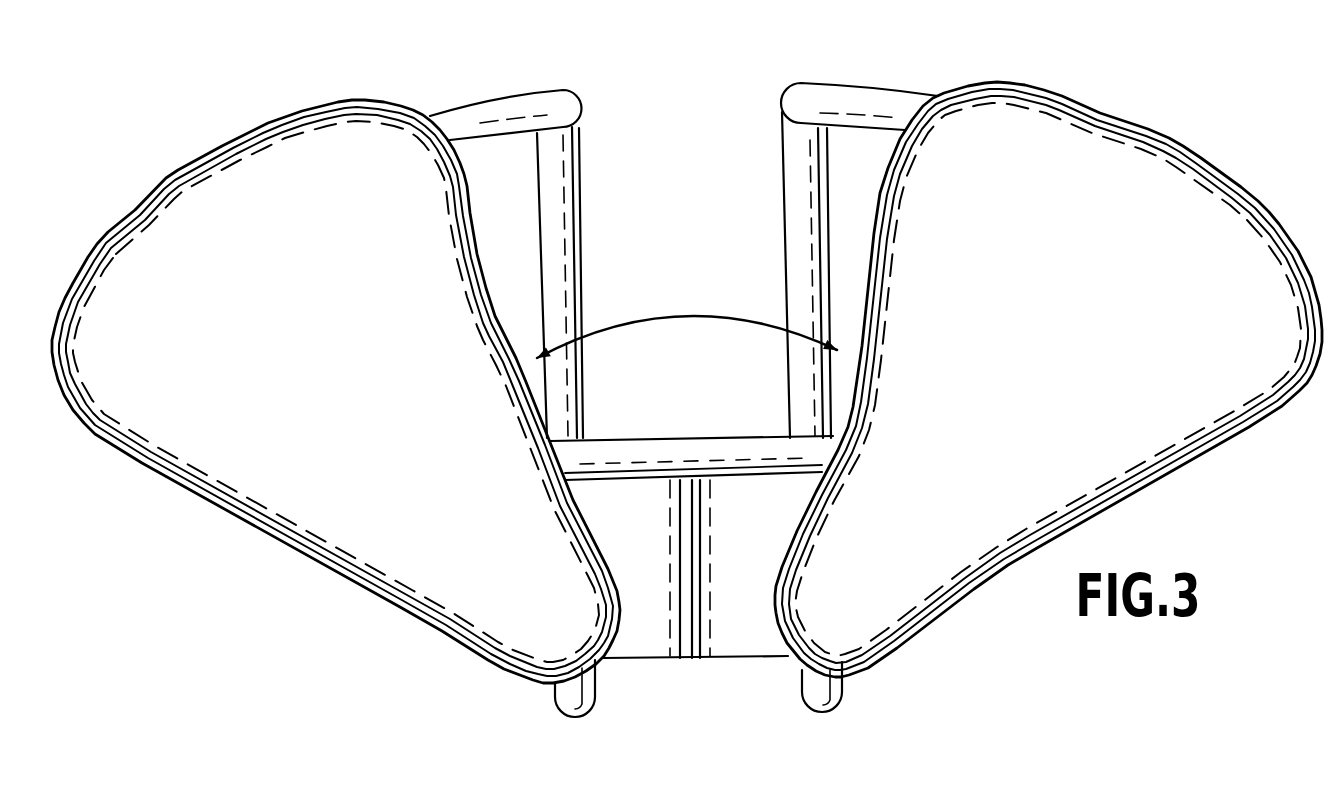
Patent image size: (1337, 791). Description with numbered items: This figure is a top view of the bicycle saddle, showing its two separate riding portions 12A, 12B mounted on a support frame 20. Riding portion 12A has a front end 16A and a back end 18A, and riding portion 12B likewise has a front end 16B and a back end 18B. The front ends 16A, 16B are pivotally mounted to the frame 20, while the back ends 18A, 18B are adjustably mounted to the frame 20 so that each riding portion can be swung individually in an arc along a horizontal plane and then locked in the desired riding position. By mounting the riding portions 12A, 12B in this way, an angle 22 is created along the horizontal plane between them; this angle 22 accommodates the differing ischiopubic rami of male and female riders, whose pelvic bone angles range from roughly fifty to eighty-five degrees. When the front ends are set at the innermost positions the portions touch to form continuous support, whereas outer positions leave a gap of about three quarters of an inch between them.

The riding portion 12A is at (297, 137).
The riding portion 12B is at (1270, 212).
The back end 18A is at (193, 220).
The back end 18B is at (1147, 173).
The front end 16A is at (530, 640).
The front end 16B is at (863, 632).
The support frame 20 is at (702, 428).
The angle 22 is at (682, 318).